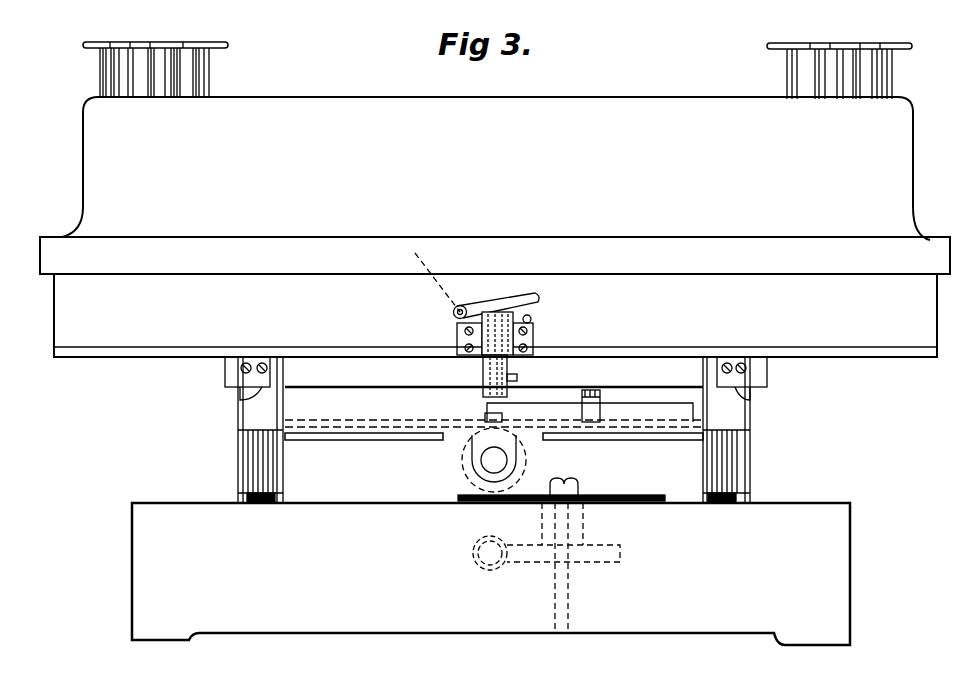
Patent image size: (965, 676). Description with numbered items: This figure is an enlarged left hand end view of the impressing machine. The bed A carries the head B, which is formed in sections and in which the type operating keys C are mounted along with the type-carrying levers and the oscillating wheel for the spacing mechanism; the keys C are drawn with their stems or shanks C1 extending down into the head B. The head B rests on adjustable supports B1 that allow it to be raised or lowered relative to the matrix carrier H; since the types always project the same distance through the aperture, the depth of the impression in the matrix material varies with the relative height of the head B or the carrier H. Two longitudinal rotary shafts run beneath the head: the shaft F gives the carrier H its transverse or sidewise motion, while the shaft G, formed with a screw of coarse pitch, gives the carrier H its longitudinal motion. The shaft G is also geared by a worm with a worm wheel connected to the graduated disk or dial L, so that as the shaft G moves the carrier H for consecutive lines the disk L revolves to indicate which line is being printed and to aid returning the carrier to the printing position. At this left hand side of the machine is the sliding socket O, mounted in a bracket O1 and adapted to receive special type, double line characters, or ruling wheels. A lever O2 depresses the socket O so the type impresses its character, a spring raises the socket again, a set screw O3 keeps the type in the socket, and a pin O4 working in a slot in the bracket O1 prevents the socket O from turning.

The bed A is at (693, 577).
The head B is at (495, 242).
The adjustable supports B1 is at (238, 462).
The type operating keys C is at (220, 42).
The comb teeth C1 is at (100, 72).
The longitudinal rotary shaft F is at (492, 460).
The screw threaded shaft G is at (495, 568).
The carrier H is at (618, 405).
The graduated scale or dial L is at (630, 497).
The sliding socket O is at (484, 370).
The bracket O1 is at (462, 337).
The lever O2 is at (492, 306).
The set screw O3 is at (518, 378).
The pin O4 is at (531, 318).